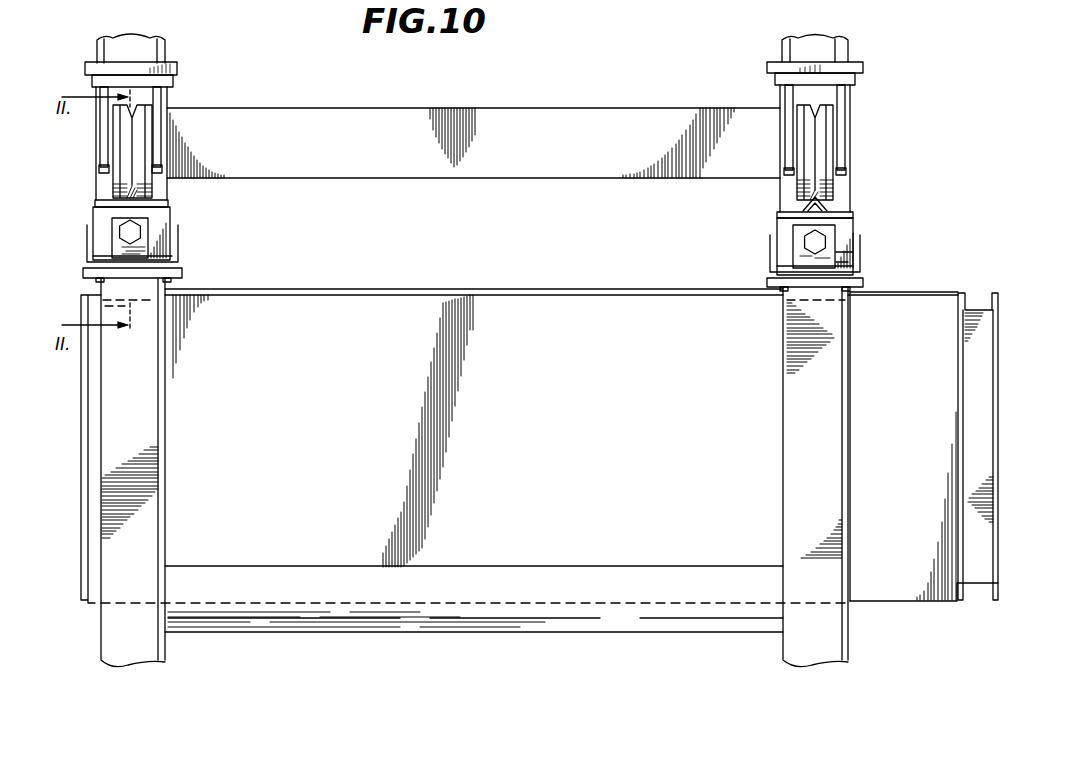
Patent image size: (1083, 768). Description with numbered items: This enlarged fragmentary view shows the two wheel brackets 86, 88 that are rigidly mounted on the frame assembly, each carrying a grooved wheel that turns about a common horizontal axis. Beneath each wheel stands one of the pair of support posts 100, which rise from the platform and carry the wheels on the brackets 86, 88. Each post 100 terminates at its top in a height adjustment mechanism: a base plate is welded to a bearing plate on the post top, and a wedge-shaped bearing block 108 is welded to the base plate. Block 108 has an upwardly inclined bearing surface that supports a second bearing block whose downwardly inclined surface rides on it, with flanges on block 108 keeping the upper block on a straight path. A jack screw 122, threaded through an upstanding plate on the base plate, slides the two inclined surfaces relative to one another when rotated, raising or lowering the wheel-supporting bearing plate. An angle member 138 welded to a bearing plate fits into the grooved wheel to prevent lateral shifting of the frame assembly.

The wheel bracket 86 is at (190, 29).
The wheel bracket 88 is at (868, 44).
The support post 100 is at (152, 423).
The bearing block 108 is at (852, 267).
The jack screw 122 is at (806, 242).
The angle member 138 is at (830, 207).